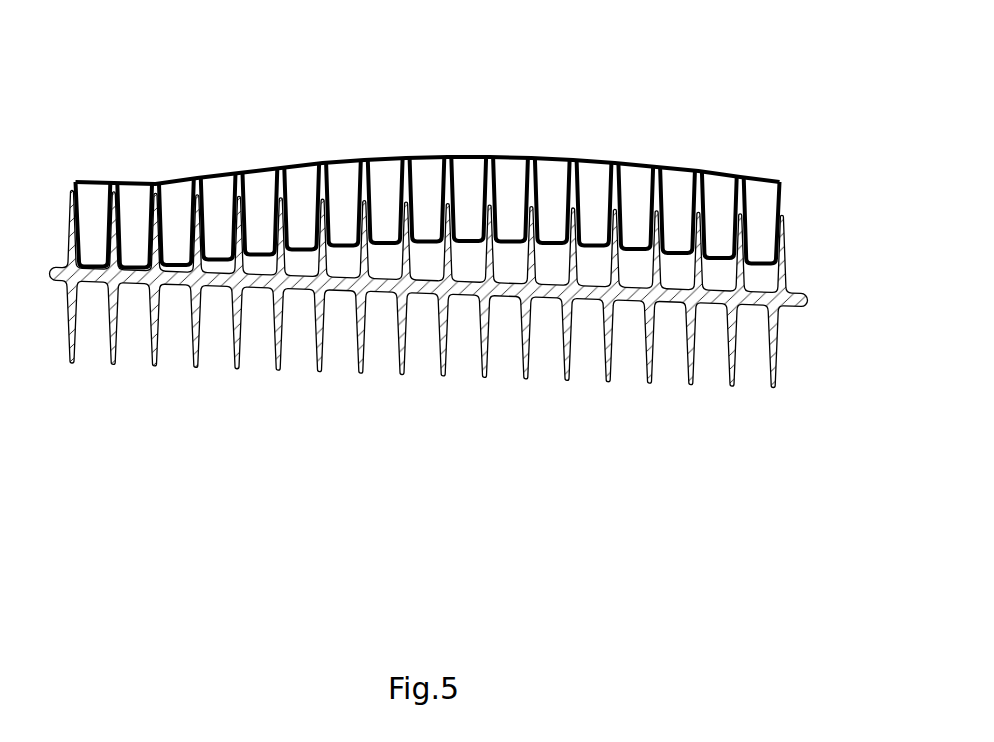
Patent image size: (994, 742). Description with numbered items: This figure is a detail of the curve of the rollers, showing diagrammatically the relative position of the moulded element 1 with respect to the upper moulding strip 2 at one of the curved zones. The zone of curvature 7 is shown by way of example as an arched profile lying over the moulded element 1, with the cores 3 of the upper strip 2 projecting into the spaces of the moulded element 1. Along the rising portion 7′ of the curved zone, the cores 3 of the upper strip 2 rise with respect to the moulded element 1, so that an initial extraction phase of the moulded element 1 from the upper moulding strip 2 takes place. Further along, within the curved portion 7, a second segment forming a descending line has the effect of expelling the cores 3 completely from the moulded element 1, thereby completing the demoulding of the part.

The moulded element 1 is at (421, 400).
The upper moulding strip 2 is at (813, 213).
The cores 3 is at (387, 182).
The zone of curvature 7 is at (474, 116).
The rising portion 7′ is at (264, 166).